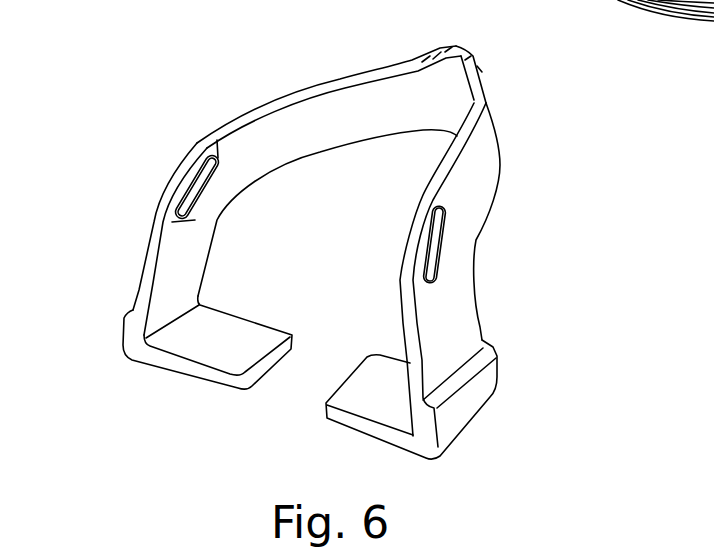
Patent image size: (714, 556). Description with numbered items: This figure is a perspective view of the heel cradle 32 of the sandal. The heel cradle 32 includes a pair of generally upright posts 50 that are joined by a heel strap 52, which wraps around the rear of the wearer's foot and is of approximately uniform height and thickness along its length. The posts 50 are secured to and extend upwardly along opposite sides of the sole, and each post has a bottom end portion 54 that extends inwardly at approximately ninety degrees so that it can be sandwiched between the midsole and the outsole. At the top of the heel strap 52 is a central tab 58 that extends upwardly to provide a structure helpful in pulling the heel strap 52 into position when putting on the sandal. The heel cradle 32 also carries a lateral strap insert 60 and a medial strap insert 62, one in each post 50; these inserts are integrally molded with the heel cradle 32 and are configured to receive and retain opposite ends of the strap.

The heel cradle 32 is at (530, 199).
The posts 50 is at (158, 266).
The heel strap 52 is at (297, 113).
The bottom end portions 54 is at (202, 357).
The central tab 58 is at (452, 56).
The lateral strap insert 60 is at (203, 181).
The medial strap insert 62 is at (445, 258).